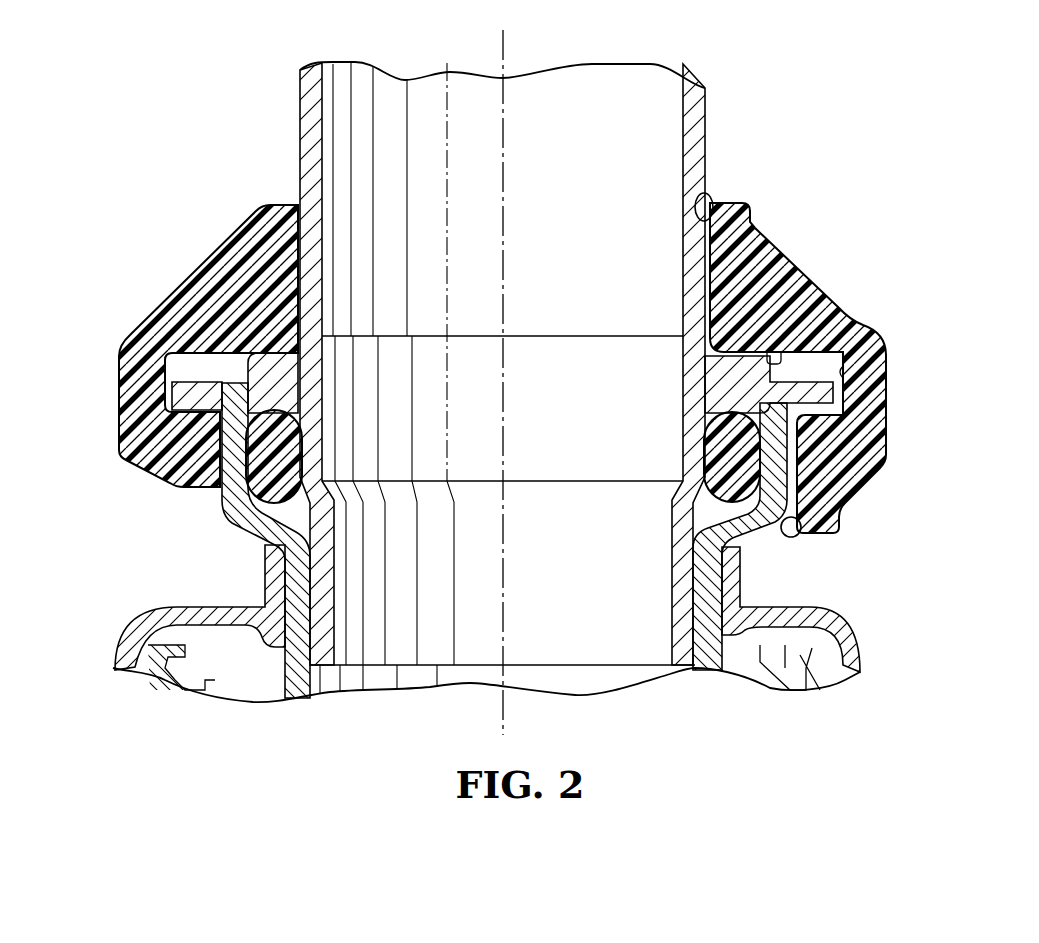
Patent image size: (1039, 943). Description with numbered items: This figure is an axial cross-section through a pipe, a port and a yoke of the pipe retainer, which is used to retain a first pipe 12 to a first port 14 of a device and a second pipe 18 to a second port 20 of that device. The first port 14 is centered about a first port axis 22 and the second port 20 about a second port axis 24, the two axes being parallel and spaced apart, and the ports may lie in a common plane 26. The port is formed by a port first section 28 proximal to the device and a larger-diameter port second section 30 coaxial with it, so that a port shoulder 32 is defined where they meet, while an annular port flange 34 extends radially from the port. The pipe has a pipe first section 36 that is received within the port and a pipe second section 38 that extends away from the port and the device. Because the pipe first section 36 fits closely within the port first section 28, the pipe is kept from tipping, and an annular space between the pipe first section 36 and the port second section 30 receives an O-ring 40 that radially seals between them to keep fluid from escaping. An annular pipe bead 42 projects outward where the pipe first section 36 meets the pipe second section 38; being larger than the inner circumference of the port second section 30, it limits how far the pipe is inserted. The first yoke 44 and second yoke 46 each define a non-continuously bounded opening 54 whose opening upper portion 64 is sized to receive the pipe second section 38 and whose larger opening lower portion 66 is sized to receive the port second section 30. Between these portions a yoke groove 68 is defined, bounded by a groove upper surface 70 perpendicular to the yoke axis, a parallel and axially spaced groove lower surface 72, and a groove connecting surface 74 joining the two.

The first pipe 12 is at (545, 350).
The second pipe 18 is at (708, 85).
The first port 14 is at (486, 639).
The second port 20 is at (722, 672).
The first port axis 22 is at (551, 375).
The second port axis 24 is at (503, 50).
The common plane 26 is at (852, 332).
The port first section 28 is at (712, 600).
The port second section 30 is at (778, 477).
The port shoulder 32 is at (248, 490).
The port flange 34 is at (120, 430).
The pipe first section 36 is at (318, 622).
The pipe second section 38 is at (305, 150).
The O-ring 40 is at (257, 470).
The pipe bead 42 is at (267, 363).
The first yoke 44 is at (957, 383).
The second yoke 46 is at (890, 342).
The opening 54 is at (836, 360).
The opening upper portion 64 is at (708, 190).
The opening lower portion 66 is at (800, 538).
The yoke groove 68 is at (183, 366).
The groove upper surface 70 is at (838, 308).
The groove lower surface 72 is at (832, 403).
The groove connecting surface 74 is at (842, 375).